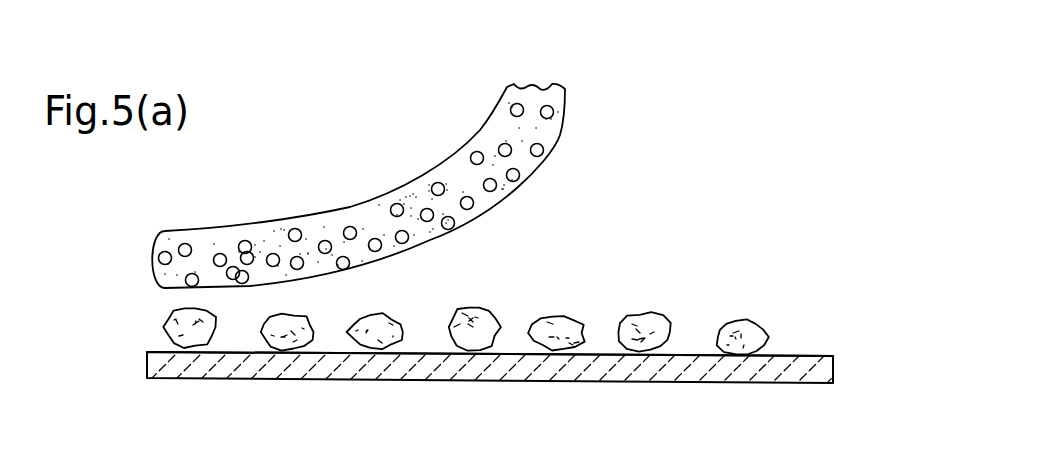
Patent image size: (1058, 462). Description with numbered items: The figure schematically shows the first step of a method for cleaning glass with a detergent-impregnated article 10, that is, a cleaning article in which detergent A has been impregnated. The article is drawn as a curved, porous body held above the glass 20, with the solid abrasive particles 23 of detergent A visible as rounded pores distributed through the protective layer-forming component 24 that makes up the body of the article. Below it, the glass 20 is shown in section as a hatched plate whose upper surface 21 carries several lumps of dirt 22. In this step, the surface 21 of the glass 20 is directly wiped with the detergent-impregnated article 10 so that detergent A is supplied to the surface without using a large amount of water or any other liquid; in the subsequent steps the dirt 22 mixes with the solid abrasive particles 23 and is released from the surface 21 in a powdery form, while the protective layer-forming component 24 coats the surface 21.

The detergent-impregnated article 10 is at (376, 186).
The glass 20 is at (542, 341).
The surface 21 is at (803, 357).
The dirt 22 is at (490, 302).
The solid abrasive particles 23 is at (438, 189).
The protective layer-forming component 24 is at (373, 222).